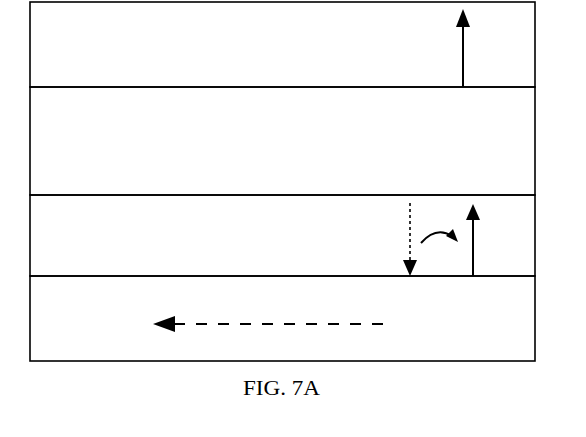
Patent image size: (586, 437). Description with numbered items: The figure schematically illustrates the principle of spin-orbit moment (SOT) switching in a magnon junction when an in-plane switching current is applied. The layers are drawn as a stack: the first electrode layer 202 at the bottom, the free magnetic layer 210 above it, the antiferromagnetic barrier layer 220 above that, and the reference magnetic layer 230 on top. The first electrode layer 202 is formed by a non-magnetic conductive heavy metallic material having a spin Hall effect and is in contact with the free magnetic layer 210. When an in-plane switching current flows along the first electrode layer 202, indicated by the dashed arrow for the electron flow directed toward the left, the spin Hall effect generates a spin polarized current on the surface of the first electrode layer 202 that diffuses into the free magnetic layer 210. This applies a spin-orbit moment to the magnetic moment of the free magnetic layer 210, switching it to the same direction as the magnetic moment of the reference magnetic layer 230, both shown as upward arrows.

The reference magnetic layer 230 is at (282, 44).
The antiferromagnetic barrier layer 220 is at (282, 141).
The free magnetic layer 210 is at (282, 235).
The first electrode layer 202 is at (282, 318).